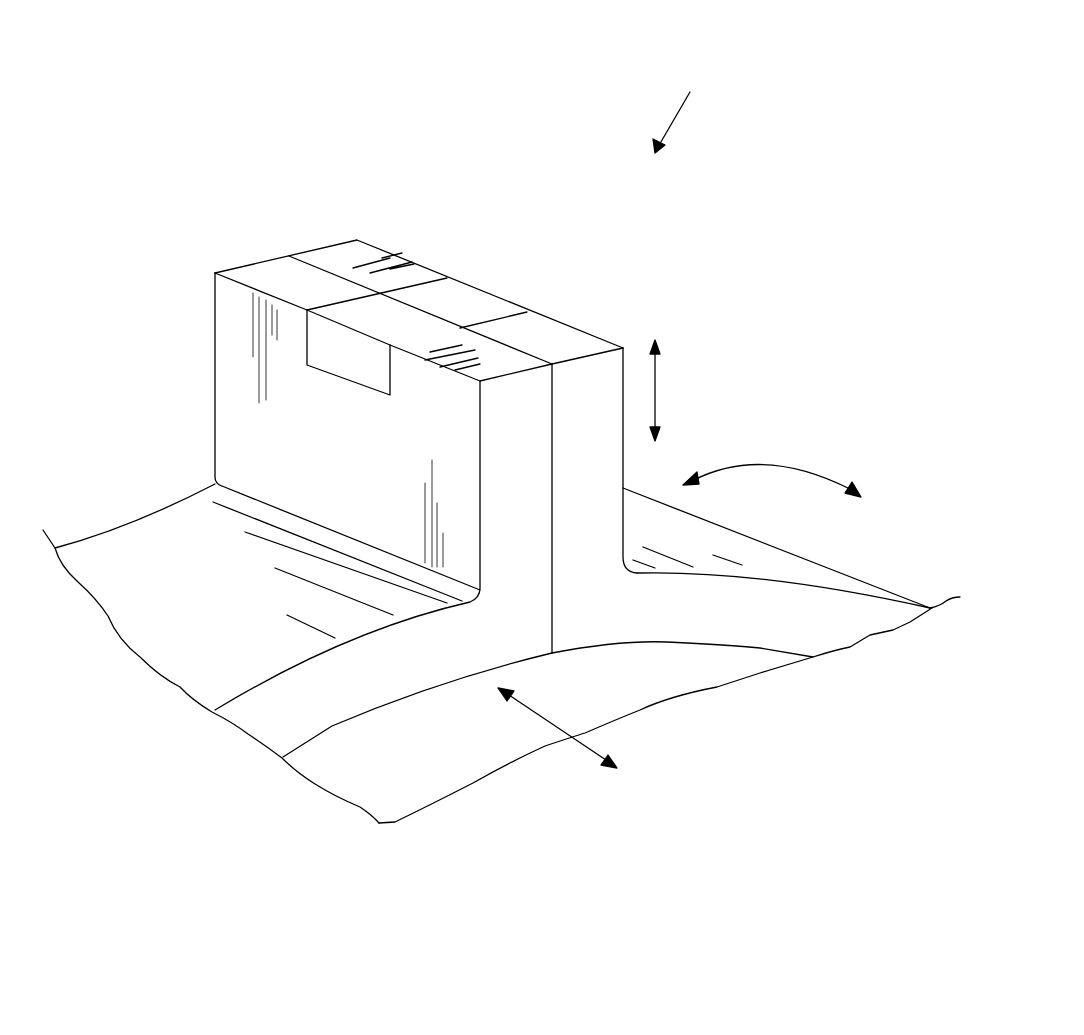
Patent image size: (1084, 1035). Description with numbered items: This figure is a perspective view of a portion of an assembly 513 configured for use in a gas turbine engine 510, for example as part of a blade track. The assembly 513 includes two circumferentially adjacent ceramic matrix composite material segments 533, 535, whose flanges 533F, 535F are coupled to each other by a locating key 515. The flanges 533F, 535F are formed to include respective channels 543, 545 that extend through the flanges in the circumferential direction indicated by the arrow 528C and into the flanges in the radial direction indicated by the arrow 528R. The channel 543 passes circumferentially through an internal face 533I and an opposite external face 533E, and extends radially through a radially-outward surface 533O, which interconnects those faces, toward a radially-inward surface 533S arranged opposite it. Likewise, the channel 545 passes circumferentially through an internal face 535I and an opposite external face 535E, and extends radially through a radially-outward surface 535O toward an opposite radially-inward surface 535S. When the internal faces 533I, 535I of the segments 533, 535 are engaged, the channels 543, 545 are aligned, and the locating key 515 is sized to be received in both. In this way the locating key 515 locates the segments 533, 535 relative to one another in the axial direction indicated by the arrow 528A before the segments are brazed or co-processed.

The gas turbine engine 510 is at (703, 48).
The assembly 513 is at (683, 107).
The locating key 515 is at (457, 290).
The channel 543 is at (523, 290).
The channel 545 is at (292, 328).
The ceramic matrix composite material segment 533 is at (669, 503).
The radially-outward surface 533O is at (540, 316).
The flange 533F is at (581, 333).
The internal face 533I is at (553, 394).
The external face 533E is at (625, 352).
The radially-inward surface 533S is at (692, 645).
The ceramic matrix composite material segment 535 is at (381, 472).
The radially-outward surface 535O is at (323, 293).
The flange 535F is at (280, 272).
The internal face 535I is at (552, 408).
The external face 535E is at (480, 484).
The radially-inward surface 535S is at (367, 711).
The radial direction arrow 528R is at (658, 398).
The circumferential direction arrow 528C is at (793, 465).
The axial direction arrow 528A is at (584, 745).